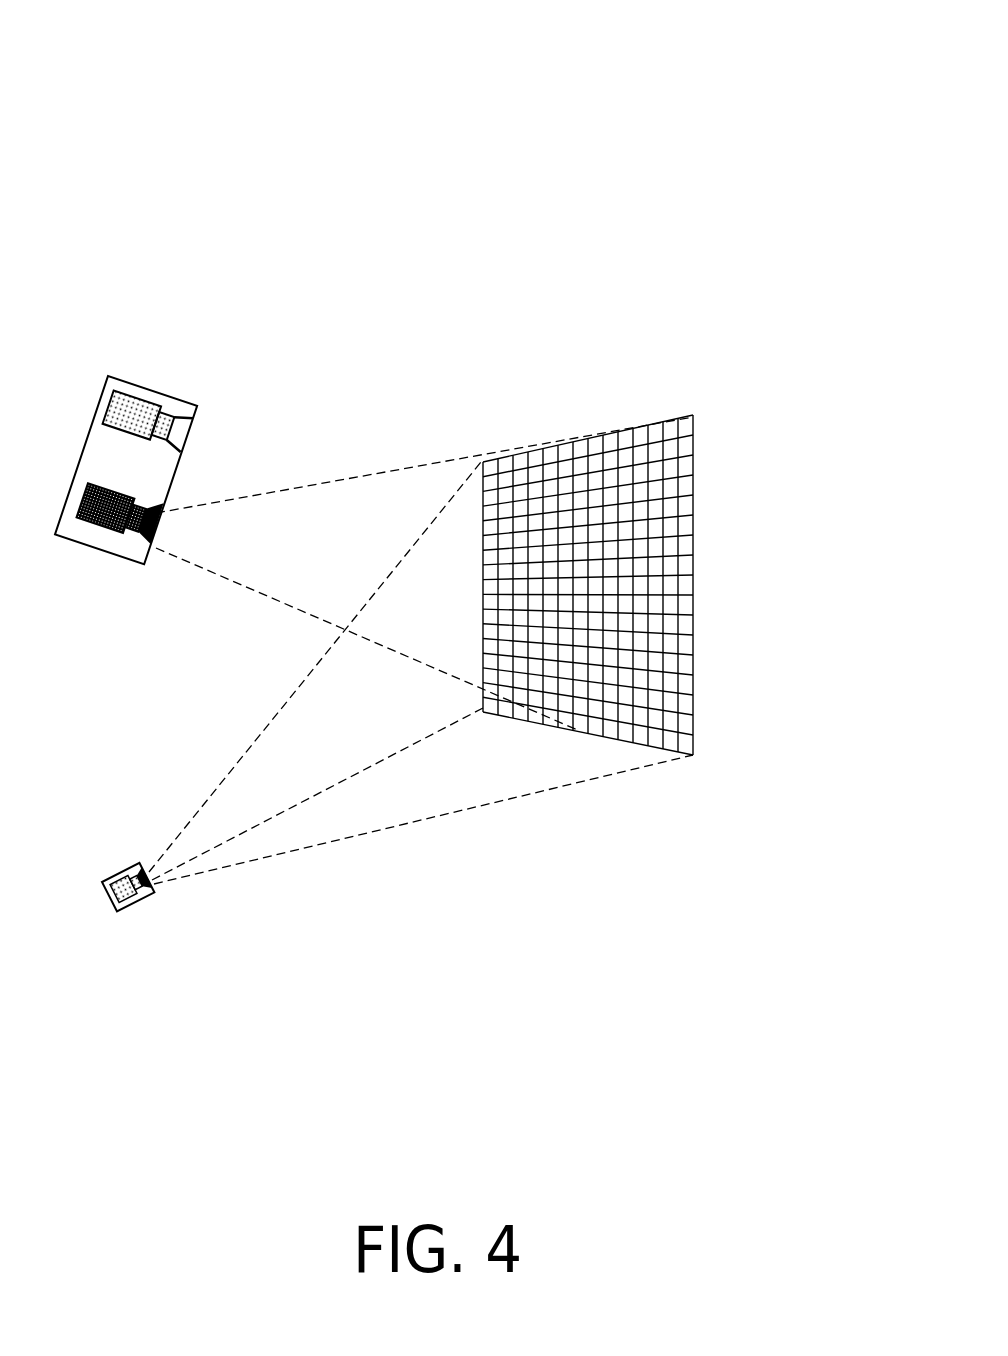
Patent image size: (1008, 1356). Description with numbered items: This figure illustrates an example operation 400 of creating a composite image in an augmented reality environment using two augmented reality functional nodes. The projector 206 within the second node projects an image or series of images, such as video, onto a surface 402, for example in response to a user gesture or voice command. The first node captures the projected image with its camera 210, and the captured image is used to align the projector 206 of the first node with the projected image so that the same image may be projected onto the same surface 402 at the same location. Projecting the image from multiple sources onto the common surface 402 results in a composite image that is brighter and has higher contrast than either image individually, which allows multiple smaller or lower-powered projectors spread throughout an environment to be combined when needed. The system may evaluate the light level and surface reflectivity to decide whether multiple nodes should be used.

The example operation 400 is at (735, 34).
The projector 206 is at (132, 418).
The camera 210 is at (145, 530).
The surface 402 is at (707, 755).